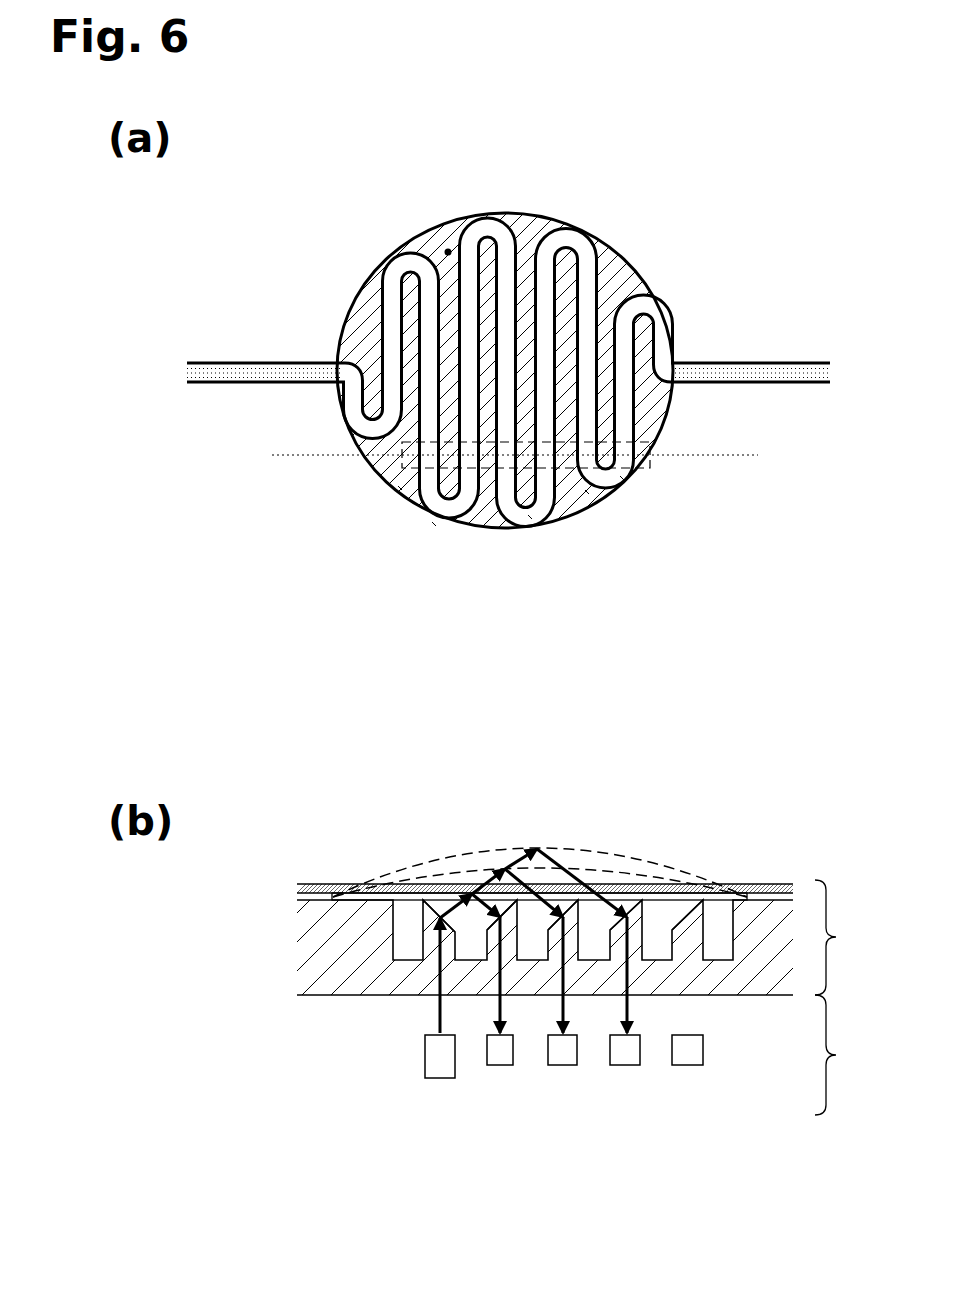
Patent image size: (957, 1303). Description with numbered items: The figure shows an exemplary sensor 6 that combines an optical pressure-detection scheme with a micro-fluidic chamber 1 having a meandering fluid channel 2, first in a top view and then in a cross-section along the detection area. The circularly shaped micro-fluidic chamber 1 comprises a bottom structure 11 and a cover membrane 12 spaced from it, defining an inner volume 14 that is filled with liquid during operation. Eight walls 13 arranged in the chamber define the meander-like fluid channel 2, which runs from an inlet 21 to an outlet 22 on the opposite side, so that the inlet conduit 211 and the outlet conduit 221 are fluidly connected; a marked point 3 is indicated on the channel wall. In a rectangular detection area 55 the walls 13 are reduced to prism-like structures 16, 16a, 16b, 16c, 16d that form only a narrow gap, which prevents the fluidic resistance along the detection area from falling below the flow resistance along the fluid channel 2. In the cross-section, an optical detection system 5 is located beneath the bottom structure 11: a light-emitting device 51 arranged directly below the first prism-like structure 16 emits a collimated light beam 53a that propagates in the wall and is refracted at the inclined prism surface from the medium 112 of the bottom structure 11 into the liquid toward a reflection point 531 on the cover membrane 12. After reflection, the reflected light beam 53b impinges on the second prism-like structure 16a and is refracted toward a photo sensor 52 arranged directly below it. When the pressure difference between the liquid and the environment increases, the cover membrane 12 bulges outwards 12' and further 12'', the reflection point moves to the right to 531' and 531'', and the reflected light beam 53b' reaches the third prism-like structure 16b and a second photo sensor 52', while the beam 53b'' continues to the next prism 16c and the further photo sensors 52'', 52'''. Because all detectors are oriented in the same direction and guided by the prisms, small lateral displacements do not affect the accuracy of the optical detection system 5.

The micro-fluidic chamber 1 is at (529, 554).
The fluid channel 2 is at (519, 315).
The channel wall point 3 is at (446, 247).
The inlet 21 is at (508, 370).
The inlet conduit 211 is at (250, 362).
The outlet 22 is at (700, 362).
The outlet conduit 221 is at (770, 362).
The walls 13 is at (530, 516).
The inner volume 14 is at (435, 524).
The detection area 55 is at (400, 488).
The sensor 6 is at (745, 698).
The cover membrane 12 is at (545, 816).
The outwardly bulged membrane 12' is at (540, 825).
The outer lens surface 12'' is at (540, 815).
The first prism-like structure 16 is at (428, 946).
The second prism-like structure 16a is at (492, 952).
The third prism-like structure 16b is at (554, 952).
The next prism-like structure 16c is at (616, 951).
The structure element d 16d is at (680, 953).
The reflection point 531 is at (433, 844).
The shifted reflection point 531' is at (466, 820).
The transmitted light beam 531'' is at (497, 796).
The collimated light beam 53a is at (419, 975).
The reflected light beam 53b is at (479, 963).
The reflected light beam 53b' is at (534, 951).
The reflected light beam 53b'' is at (582, 941).
The optical detection system 5 is at (618, 1089).
The light-emitting device 51 is at (426, 1080).
The photo sensor 52 is at (472, 1109).
The second photo sensor 52' is at (535, 1109).
The light detector 52'' is at (597, 1109).
The light detector 52''' is at (658, 1109).
The bottom structure 11 is at (345, 1032).
The medium of the bottom structure 112 is at (395, 985).